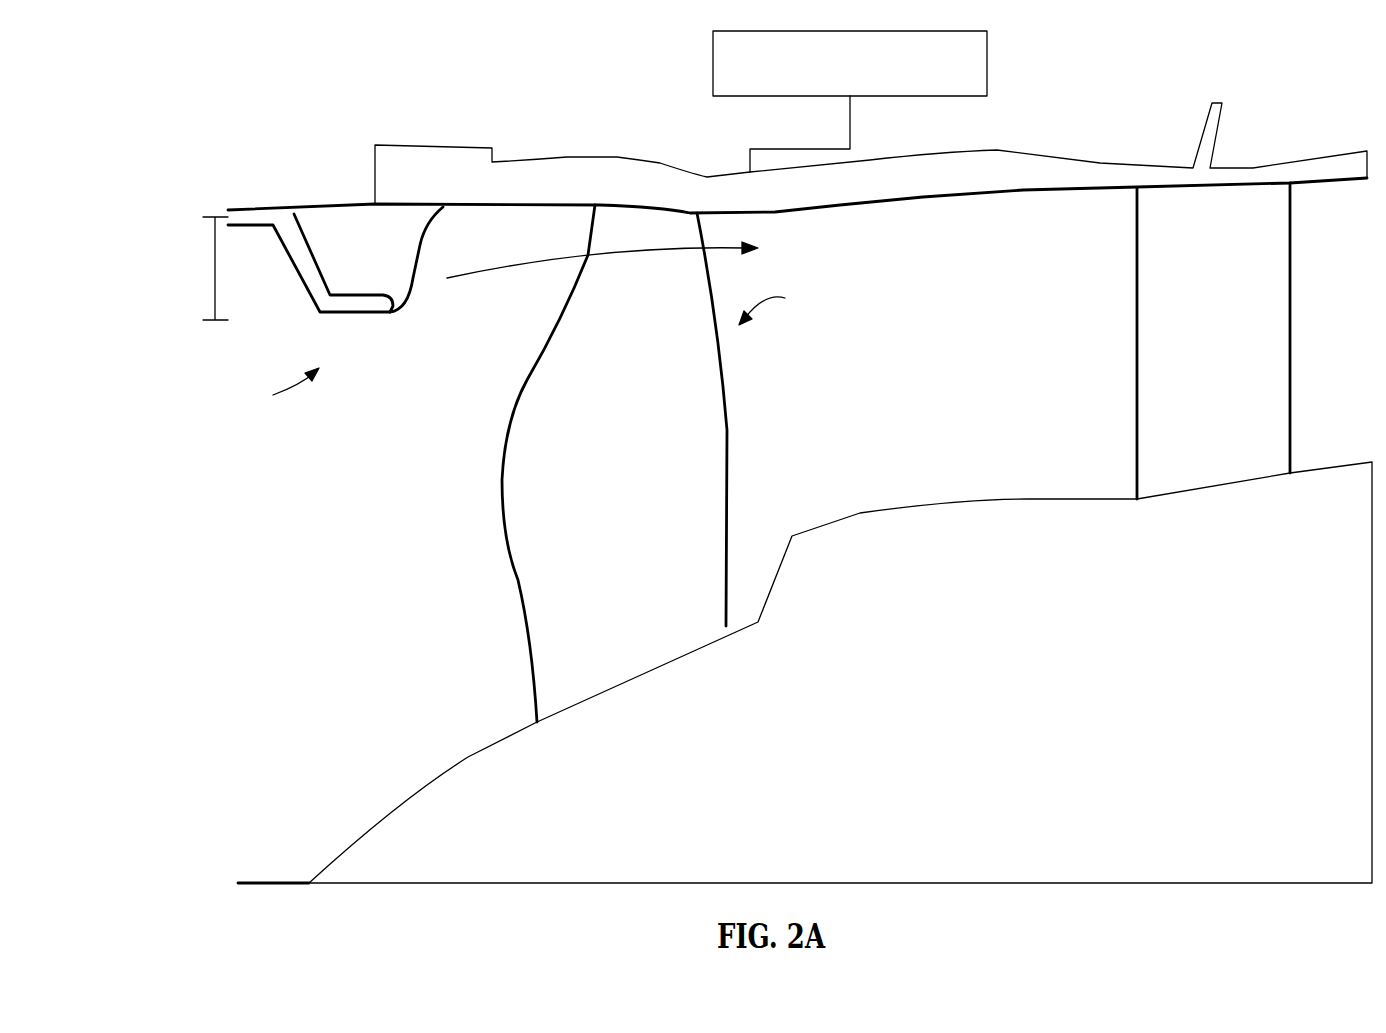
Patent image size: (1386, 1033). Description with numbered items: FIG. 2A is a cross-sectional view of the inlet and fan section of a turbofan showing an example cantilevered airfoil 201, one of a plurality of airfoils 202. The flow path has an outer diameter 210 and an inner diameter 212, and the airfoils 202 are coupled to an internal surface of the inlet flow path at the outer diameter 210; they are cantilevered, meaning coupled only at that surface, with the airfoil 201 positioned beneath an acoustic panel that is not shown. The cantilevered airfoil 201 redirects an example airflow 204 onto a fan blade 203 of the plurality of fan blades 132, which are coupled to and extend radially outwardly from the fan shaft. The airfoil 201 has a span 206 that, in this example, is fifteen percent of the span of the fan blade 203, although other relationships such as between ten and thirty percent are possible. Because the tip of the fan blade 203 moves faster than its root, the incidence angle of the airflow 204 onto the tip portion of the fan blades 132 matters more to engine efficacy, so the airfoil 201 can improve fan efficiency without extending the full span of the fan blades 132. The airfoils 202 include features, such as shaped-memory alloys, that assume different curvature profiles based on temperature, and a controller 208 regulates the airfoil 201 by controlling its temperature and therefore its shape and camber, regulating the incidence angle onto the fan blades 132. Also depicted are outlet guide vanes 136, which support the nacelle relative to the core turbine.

The fan blades 132 is at (786, 308).
The outlet guide vanes 136 is at (1293, 290).
The cantilevered airfoil 201 is at (338, 318).
The airfoils 202 is at (273, 387).
The fan blade 203 is at (725, 390).
The airflow 204 is at (562, 263).
The span 206 is at (215, 265).
The controller 208 is at (850, 101).
The outer diameter 210 is at (848, 207).
The inner diameter 212 is at (466, 761).